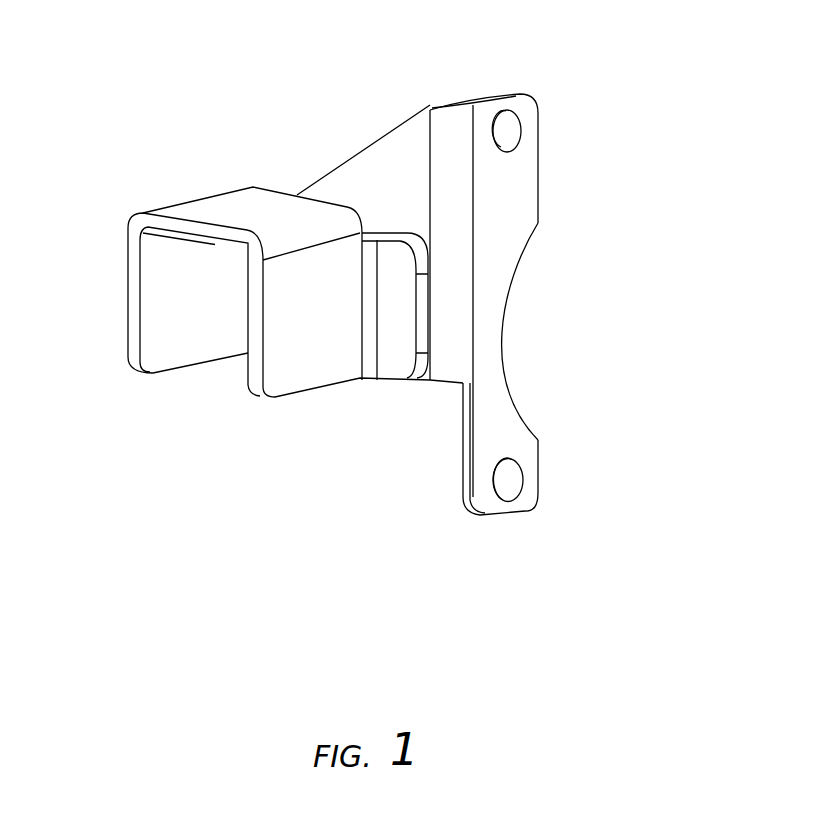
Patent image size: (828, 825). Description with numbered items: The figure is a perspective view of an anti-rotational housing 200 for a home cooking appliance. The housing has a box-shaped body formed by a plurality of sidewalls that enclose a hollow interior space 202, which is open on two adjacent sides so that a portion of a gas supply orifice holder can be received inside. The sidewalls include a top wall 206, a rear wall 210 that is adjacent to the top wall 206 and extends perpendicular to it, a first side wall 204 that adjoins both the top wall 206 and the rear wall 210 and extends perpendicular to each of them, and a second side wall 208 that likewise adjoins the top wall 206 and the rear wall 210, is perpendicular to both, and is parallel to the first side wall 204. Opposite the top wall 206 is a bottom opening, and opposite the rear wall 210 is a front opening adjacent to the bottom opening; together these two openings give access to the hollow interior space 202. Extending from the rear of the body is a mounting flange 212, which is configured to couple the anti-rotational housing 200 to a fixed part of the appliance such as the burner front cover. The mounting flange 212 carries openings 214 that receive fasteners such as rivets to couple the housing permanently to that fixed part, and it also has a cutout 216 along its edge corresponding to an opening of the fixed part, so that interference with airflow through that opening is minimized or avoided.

The anti-rotational housing 200 is at (371, 334).
The hollow interior space 202 is at (239, 307).
The first side wall 204 is at (316, 388).
The top wall 206 is at (197, 199).
The second side wall 208 is at (125, 292).
The rear wall 210 is at (377, 140).
The mounting flange 212 is at (461, 278).
The openings 214 is at (498, 108).
The cutouts 216 is at (500, 307).